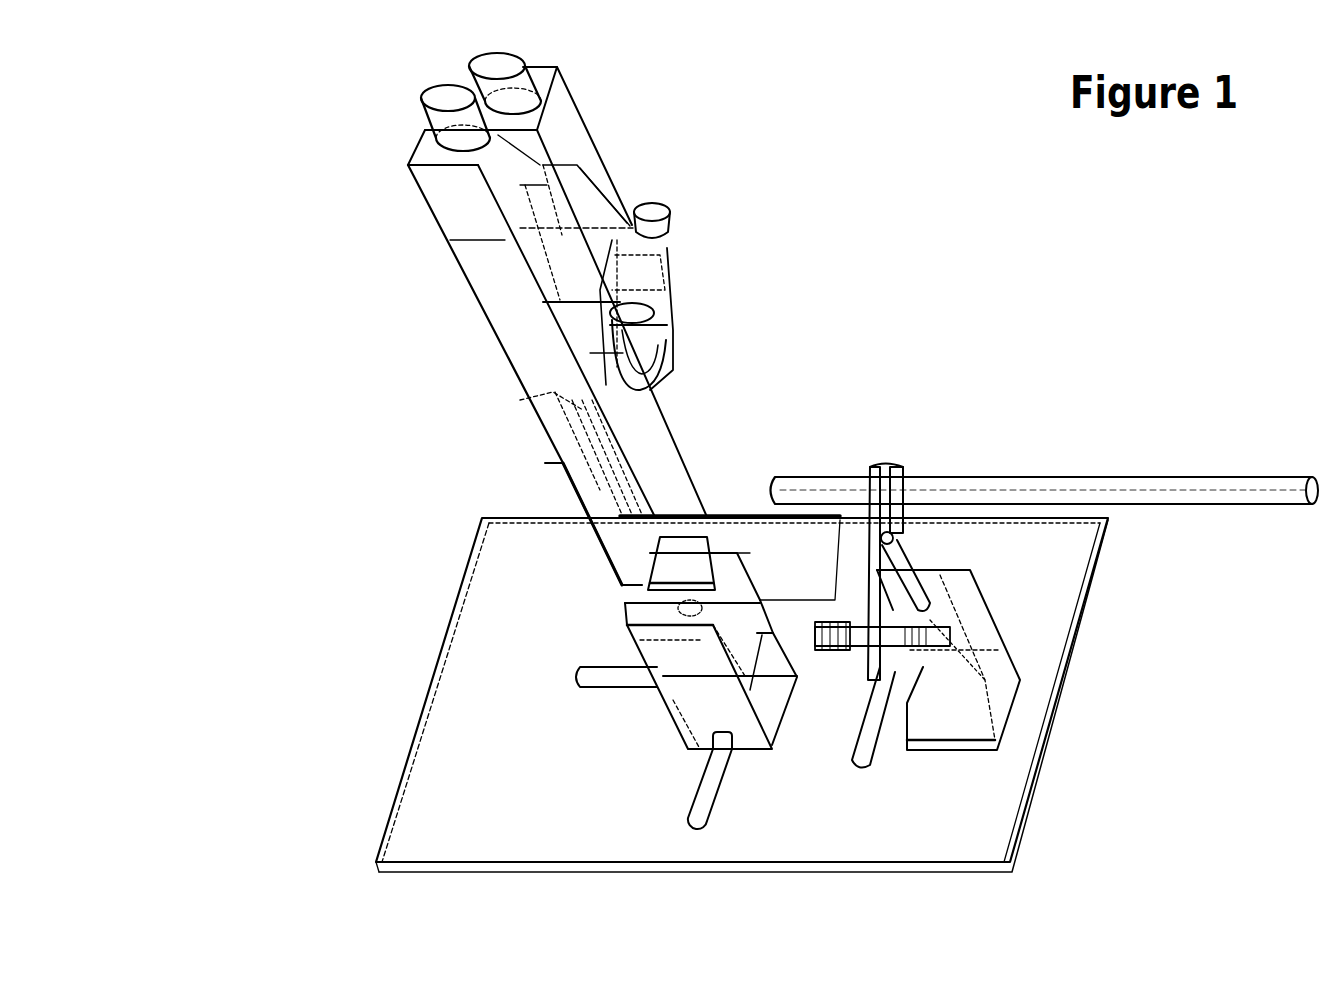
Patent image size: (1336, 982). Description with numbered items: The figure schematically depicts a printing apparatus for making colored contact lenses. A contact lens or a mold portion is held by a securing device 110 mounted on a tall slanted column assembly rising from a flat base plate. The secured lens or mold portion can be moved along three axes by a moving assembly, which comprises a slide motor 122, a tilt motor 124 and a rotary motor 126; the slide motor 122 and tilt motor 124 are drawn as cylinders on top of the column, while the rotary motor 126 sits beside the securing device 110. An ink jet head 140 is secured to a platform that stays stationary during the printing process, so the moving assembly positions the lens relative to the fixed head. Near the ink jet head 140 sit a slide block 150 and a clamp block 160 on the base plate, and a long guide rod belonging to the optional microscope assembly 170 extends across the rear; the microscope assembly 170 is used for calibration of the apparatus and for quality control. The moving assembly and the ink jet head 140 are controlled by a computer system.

The securing device 110 is at (680, 307).
The slide motor 122 is at (422, 128).
The tilt motor 124 is at (524, 68).
The rotary motor 126 is at (668, 208).
The ink jet head 140 is at (703, 547).
The slide block 150 is at (780, 742).
The clamp block 160 is at (930, 688).
The microscope assembly 170 is at (1015, 478).